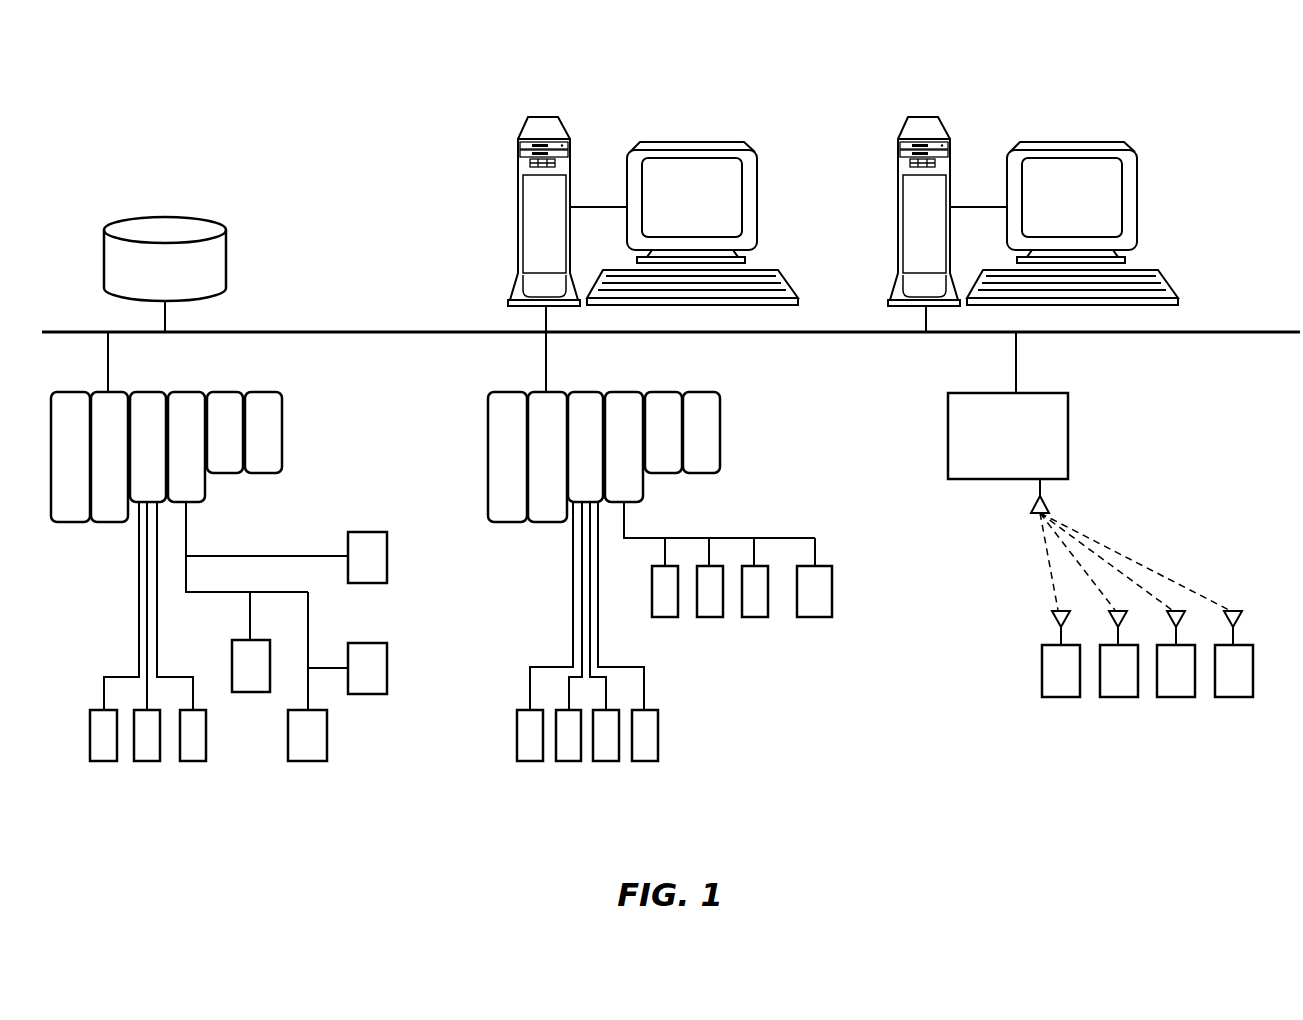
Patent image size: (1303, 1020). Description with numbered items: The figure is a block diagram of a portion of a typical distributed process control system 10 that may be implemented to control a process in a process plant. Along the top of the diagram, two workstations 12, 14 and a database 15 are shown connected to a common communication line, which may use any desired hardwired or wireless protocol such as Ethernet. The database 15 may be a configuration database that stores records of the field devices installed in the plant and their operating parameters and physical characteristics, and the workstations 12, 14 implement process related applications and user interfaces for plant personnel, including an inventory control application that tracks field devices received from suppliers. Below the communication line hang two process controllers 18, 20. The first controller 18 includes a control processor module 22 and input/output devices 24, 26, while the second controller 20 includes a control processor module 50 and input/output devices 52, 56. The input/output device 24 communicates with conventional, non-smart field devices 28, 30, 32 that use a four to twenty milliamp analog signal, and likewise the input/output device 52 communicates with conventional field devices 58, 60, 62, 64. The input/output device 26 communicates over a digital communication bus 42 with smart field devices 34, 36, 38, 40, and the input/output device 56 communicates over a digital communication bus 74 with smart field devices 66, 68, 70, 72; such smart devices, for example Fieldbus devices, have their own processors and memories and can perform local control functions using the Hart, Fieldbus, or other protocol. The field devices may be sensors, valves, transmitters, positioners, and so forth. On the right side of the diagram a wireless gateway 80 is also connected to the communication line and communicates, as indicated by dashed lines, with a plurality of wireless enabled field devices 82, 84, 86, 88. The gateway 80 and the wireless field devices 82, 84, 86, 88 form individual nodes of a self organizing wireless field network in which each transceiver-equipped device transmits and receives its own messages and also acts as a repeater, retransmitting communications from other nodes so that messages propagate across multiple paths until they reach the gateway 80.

The distributed process control system 10 is at (816, 80).
The workstation 12 is at (543, 117).
The workstation 14 is at (925, 117).
The database 15 is at (197, 219).
The process controller 18 is at (219, 571).
The process controller 20 is at (660, 571).
The control processor module 22 is at (95, 391).
The input/output device 24 is at (147, 391).
The input/output device 26 is at (193, 391).
The field device 28 is at (103, 761).
The field device 30 is at (148, 761).
The field device 32 is at (193, 761).
The smart field device 34 is at (252, 692).
The smart field device 36 is at (304, 761).
The smart field device 38 is at (367, 694).
The smart field device 40 is at (367, 583).
The digital communication bus 42 is at (187, 530).
The control processor module 50 is at (533, 391).
The input/output device 52 is at (585, 391).
The input/output device 56 is at (632, 391).
The field device 58 is at (533, 761).
The field device 60 is at (570, 761).
The field device 62 is at (608, 761).
The field device 64 is at (646, 761).
The smart field device 66 is at (666, 617).
The smart field device 68 is at (711, 617).
The smart field device 70 is at (756, 617).
The smart field device 72 is at (817, 617).
The digital communication bus 74 is at (643, 537).
The wireless gateway 80 is at (948, 422).
The wireless enabled field device 82 is at (1063, 697).
The wireless enabled field device 84 is at (1121, 697).
The wireless enabled field device 86 is at (1178, 697).
The wireless enabled field device 88 is at (1236, 697).